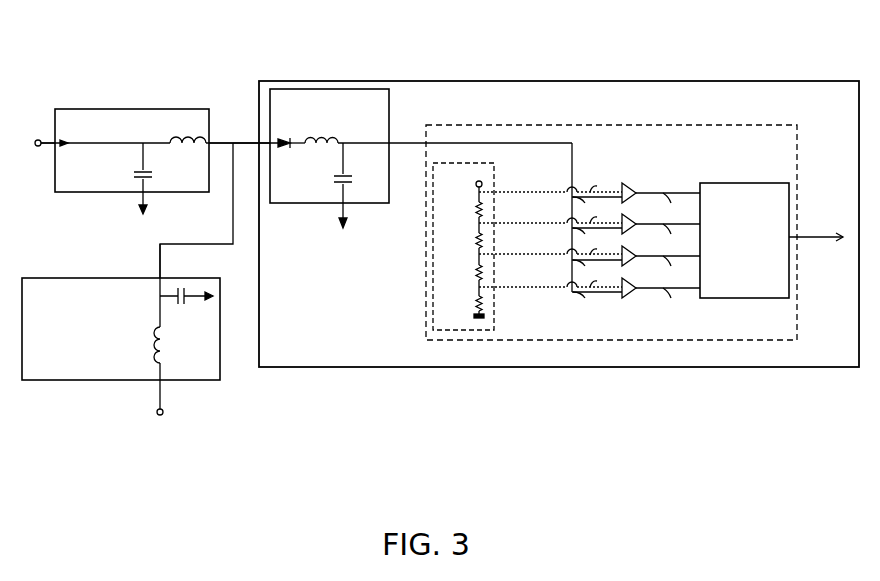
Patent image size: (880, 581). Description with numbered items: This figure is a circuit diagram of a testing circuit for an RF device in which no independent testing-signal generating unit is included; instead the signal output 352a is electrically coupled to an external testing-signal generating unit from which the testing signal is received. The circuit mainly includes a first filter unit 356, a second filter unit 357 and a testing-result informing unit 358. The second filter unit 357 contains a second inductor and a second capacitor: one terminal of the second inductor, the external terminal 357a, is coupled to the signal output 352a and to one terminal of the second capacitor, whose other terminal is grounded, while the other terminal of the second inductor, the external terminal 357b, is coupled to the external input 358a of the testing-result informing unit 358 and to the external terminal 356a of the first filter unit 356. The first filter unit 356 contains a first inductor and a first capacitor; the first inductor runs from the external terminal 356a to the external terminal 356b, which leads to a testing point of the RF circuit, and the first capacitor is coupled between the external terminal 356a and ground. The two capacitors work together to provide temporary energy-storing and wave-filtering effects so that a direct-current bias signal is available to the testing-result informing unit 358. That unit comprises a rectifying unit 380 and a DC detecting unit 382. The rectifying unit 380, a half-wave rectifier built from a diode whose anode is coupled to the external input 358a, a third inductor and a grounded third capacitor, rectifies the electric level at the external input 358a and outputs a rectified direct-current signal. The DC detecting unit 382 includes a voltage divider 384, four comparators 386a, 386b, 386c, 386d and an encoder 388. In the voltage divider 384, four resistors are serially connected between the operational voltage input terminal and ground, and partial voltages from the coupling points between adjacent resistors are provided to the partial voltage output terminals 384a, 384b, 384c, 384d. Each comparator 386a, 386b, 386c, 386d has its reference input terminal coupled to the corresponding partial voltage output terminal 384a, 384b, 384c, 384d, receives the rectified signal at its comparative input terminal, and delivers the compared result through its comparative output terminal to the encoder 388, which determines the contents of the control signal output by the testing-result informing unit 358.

The signal output 352a is at (42, 138).
The first filter unit 356 is at (45, 380).
The external terminal of the first filter unit 356a is at (160, 252).
The external terminal of the first filter unit 356b is at (158, 403).
The second filter unit 357 is at (113, 109).
The external terminal of the second filter unit 357a is at (44, 149).
The external terminal of the second filter unit 357b is at (217, 142).
The testing-result informing unit 358 is at (583, 81).
The external input of the testing-result informing unit 358a is at (247, 142).
The rectifying unit 380 is at (333, 89).
The DC detecting unit 382 is at (483, 123).
The voltage divider 384 is at (433, 315).
The partial voltage output terminal 384a is at (526, 192).
The partial voltage output terminal 384b is at (526, 223).
The partial voltage output terminal 384c is at (526, 254).
The partial voltage output terminal 384d is at (526, 287).
The comparator 386a is at (622, 184).
The comparator 386b is at (622, 215).
The comparator 386c is at (622, 247).
The comparator 386d is at (622, 279).
The encoder 388 is at (748, 298).